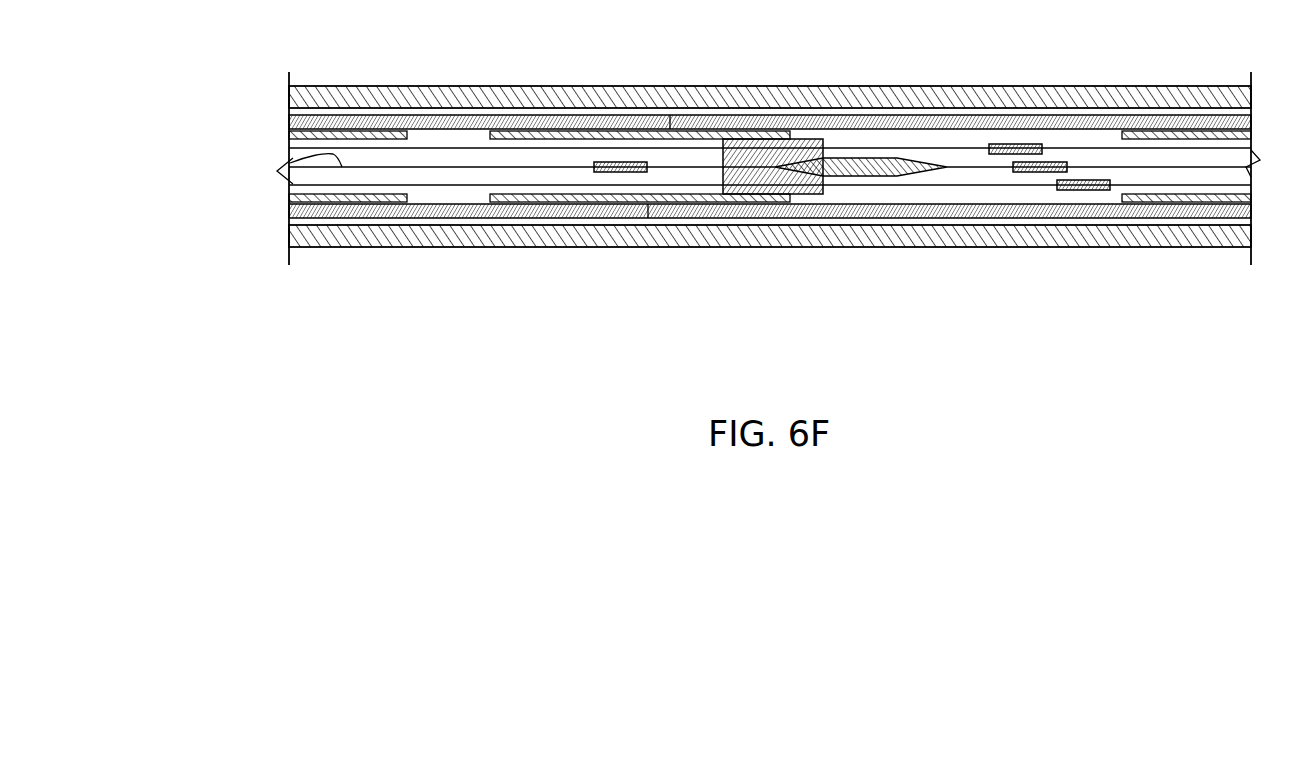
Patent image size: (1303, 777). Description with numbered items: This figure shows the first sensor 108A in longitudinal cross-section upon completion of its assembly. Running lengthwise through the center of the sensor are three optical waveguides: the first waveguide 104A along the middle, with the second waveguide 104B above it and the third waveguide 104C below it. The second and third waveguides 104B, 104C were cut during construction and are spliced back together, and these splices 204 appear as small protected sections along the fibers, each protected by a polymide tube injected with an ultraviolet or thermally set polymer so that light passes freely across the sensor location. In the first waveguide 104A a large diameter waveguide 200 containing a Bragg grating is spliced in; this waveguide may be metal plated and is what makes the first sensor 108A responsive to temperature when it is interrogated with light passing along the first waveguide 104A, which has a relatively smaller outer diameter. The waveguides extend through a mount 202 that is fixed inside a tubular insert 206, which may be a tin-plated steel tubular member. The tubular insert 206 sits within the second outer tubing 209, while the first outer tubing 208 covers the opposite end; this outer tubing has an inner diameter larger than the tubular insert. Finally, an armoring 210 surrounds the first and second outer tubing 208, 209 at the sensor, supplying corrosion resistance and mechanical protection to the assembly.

The first sensor 108A is at (604, 66).
The first waveguide 104A is at (290, 162).
The second waveguide 104B is at (296, 147).
The third waveguide 104C is at (294, 188).
The large diameter waveguide 200 is at (853, 176).
The mount 202 is at (763, 195).
The splices 204 is at (645, 162).
The tubular insert 206 is at (555, 204).
The first outer tubing 208 is at (1147, 223).
The second outer tubing 209 is at (443, 218).
The armoring 210 is at (1178, 86).